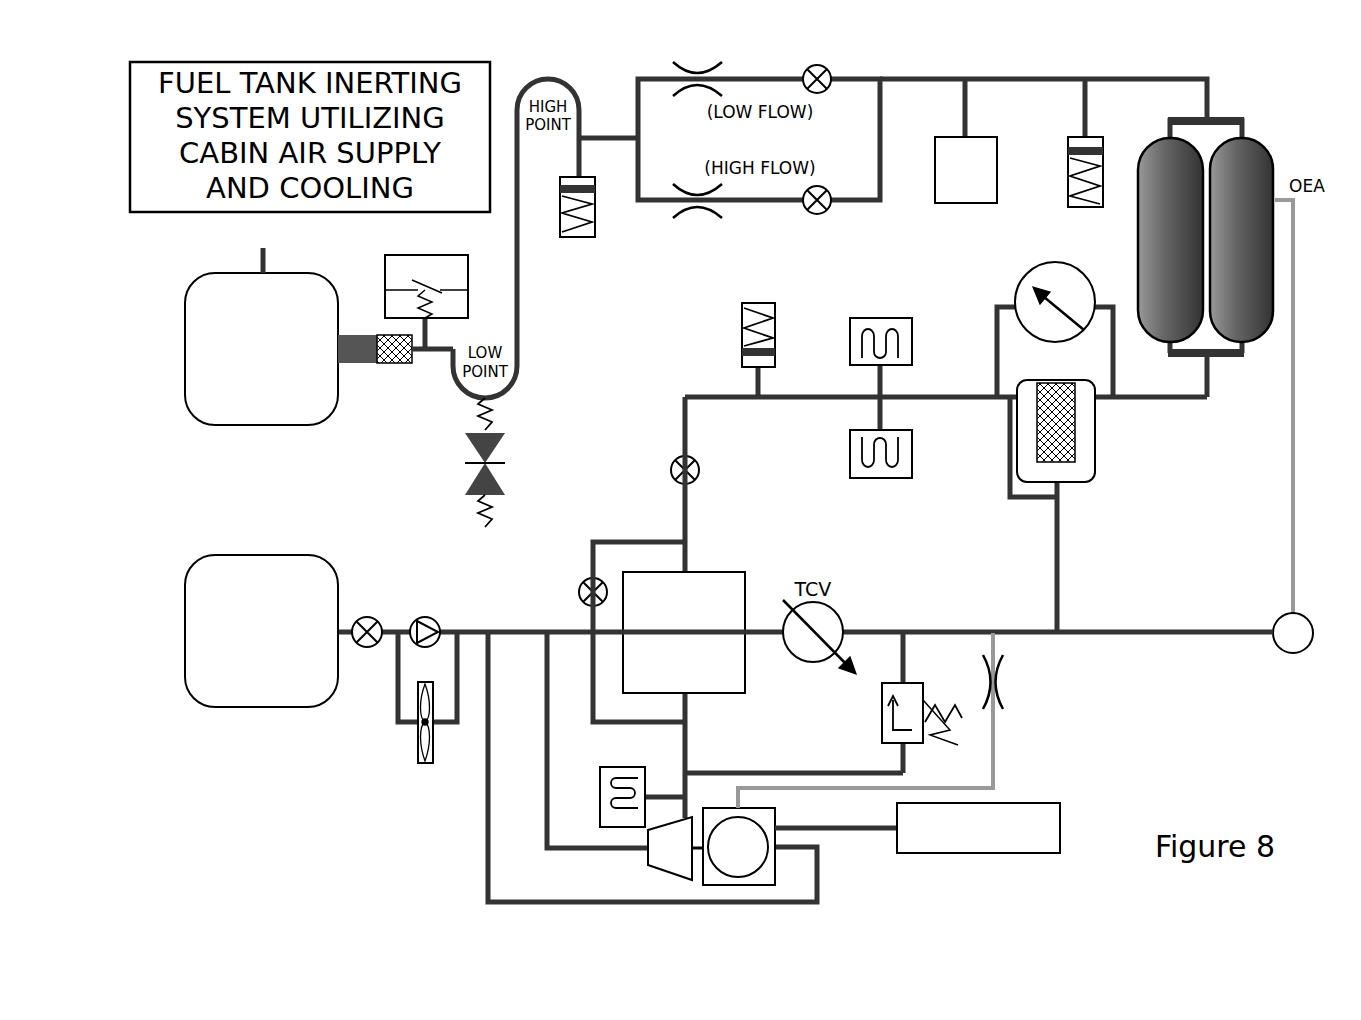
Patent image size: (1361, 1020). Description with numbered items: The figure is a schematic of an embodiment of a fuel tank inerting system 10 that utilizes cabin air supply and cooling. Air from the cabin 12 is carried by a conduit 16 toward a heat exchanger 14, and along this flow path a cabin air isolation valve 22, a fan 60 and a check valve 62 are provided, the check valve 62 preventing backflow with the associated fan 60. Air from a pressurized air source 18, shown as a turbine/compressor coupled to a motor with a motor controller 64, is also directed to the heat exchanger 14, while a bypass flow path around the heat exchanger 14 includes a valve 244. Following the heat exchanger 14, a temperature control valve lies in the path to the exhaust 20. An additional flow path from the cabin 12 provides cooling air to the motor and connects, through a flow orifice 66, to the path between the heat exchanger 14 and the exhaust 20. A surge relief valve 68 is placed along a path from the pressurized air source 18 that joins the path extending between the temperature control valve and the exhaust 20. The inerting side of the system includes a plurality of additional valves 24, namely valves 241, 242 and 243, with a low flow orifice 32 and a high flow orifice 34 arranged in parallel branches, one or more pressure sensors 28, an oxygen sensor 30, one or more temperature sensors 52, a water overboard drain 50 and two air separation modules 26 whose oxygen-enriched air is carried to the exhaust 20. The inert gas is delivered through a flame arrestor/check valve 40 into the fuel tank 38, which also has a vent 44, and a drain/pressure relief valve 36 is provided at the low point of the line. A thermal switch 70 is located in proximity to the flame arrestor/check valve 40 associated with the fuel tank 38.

The fuel tank inerting system 10 is at (1232, 48).
The cabin 12 is at (300, 555).
The heat exchanger 14 is at (718, 572).
The conduit 16 is at (390, 630).
The pressurized air source 18 is at (665, 885).
The exhaust 20 is at (1278, 613).
The valve 22 is at (367, 617).
The additional valves 24 is at (711, 322).
The valve 241 is at (701, 470).
The valve 242 is at (826, 213).
The valve 243 is at (827, 68).
The valve 244 is at (584, 584).
The air separation module 26 is at (1150, 140).
The pressure sensor 28 is at (1068, 163).
The oxygen sensor 30 is at (946, 136).
The low flow orifice 32 is at (697, 56).
The high flow orifice 34 is at (694, 220).
The drain/pressure relief valve 36 is at (510, 455).
The fuel tank 38 is at (300, 426).
The flame arrestor/check valve 40 is at (388, 365).
The vent 44 is at (235, 238).
The H2O overboard drain 50 is at (1005, 443).
The temperature sensor 52 is at (890, 318).
The fan 60 is at (415, 745).
The check valve 62 is at (436, 617).
The motor controller 64 is at (1035, 803).
The flow orifice 66 is at (1005, 682).
The surge relief valve 68 is at (880, 718).
The thermal switch 70 is at (448, 256).